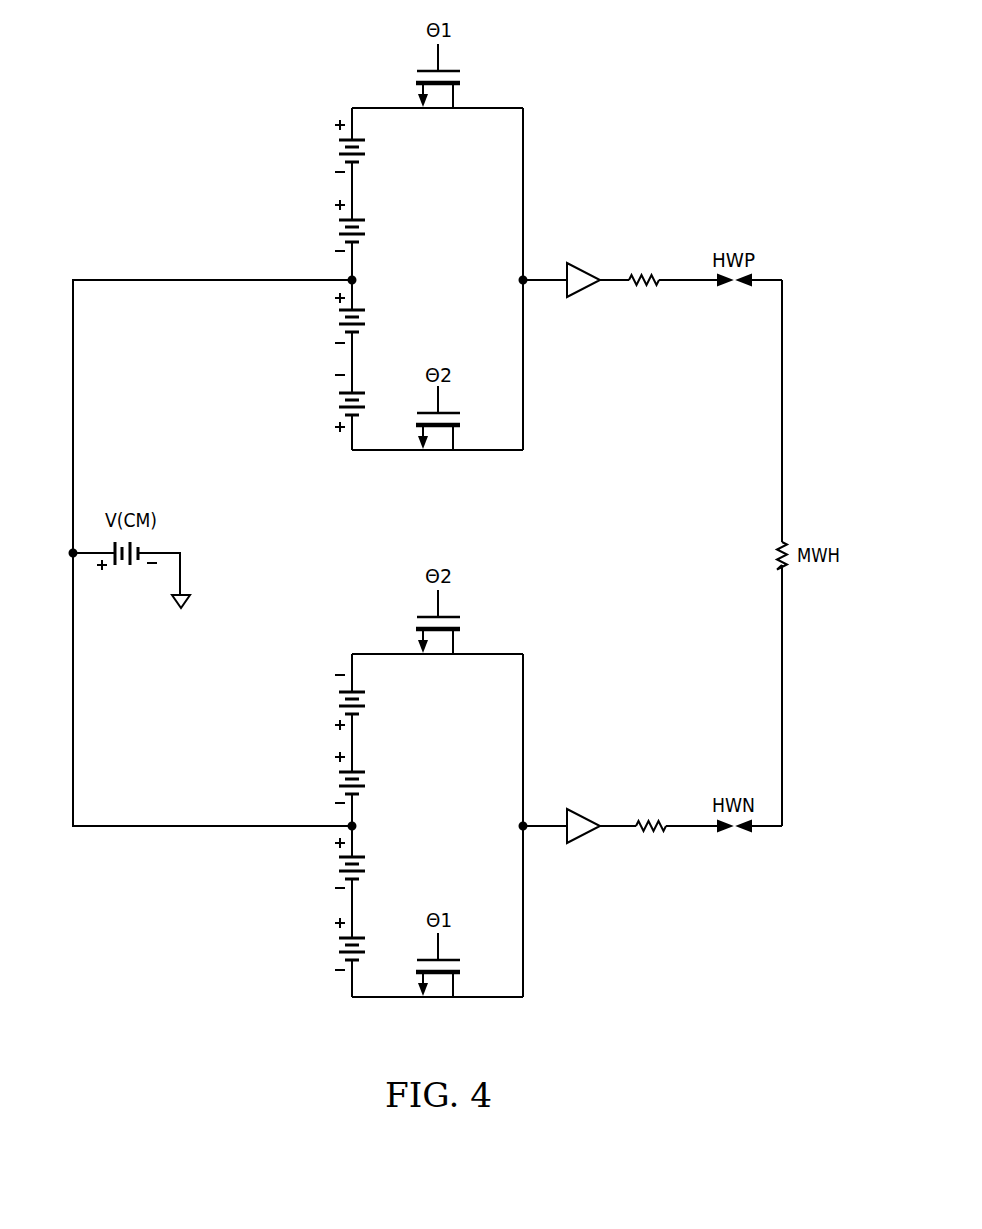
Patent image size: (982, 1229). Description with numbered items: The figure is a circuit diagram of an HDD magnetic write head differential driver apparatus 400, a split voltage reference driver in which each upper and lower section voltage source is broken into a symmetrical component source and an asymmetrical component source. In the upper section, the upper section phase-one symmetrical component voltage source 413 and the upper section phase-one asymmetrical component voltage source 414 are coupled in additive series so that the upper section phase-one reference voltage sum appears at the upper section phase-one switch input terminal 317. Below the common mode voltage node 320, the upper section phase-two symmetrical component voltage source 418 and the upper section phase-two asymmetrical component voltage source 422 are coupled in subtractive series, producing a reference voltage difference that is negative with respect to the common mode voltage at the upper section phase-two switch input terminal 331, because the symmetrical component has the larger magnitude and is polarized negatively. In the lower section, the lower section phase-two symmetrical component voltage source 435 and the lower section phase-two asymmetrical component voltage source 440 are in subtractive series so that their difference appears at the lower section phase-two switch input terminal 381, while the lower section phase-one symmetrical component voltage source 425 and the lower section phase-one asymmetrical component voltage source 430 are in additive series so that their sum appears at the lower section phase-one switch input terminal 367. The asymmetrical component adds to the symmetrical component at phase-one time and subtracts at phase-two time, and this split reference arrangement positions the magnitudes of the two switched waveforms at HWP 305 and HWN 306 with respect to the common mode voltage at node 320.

The HDD magnetic write head differential driver apparatus 400 is at (654, 110).
The upper section θ1 switch input terminal 317 is at (375, 107).
The upper section θ2 switch input terminal 331 is at (372, 452).
The lower section θ2 switch input terminal 381 is at (375, 652).
The lower section θ1 switch input terminal 367 is at (373, 998).
The common mode voltage node 320 is at (358, 278).
The upper section θ1 asymmetrical component voltage source VS(Uθ1ASYM) 414 is at (376, 152).
The upper section θ1 symmetrical component voltage source VS(Uθ1S) 413 is at (379, 232).
The upper section θ2 symmetrical component voltage source VS(Uθ2S) 418 is at (379, 323).
The upper section θ2 asymmetrical component voltage source VS(Uθ2ASYM) 422 is at (325, 427).
The lower section θ2 asymmetrical component voltage source VS(Lθ2ASYM) 440 is at (378, 697).
The lower section θ2 symmetrical component voltage source VS(Lθ2S) 435 is at (379, 777).
The lower section θ1 symmetrical component voltage source VS(Lθ1S) 425 is at (379, 868).
The lower section θ1 asymmetrical component voltage source VS(Lθ1ASYM) 430 is at (325, 972).
The HWP 305 is at (732, 287).
The HWN 306 is at (732, 832).